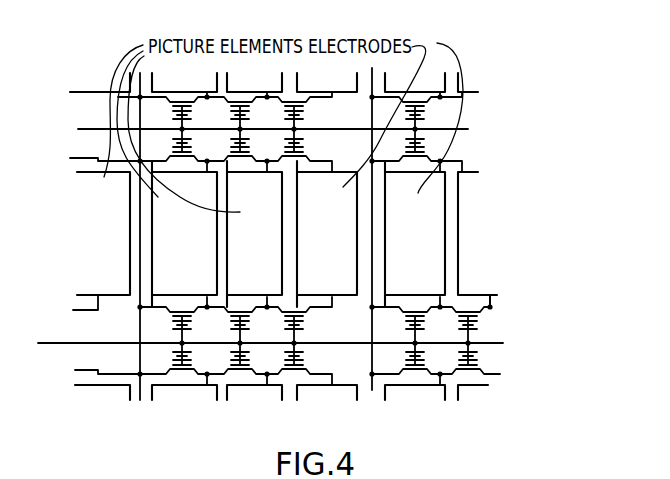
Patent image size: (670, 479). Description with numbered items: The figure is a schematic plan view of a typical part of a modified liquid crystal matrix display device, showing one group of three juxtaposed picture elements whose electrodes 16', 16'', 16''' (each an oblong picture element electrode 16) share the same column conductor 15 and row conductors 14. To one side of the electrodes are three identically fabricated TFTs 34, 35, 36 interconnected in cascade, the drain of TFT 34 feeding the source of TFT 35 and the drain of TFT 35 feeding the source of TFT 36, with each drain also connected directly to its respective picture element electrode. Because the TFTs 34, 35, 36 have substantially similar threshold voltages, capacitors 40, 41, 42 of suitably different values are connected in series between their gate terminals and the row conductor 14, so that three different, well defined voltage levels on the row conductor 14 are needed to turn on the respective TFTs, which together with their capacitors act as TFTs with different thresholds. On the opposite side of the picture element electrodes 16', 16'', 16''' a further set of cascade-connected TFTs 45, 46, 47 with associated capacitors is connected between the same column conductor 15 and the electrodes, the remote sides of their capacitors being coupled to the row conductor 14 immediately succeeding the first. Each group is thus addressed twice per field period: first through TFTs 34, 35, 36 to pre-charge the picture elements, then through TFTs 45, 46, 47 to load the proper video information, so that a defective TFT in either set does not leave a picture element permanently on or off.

The row conductor 14 is at (78, 130).
The column conductor 15 is at (138, 110).
The picture element electrode 16 is at (254, 234).
The picture element electrode 16' is at (184, 234).
The picture element electrode 16'' is at (254, 234).
The picture element electrode 16''' is at (327, 234).
The TFT 34 is at (178, 149).
The TFT 35 is at (237, 149).
The TFT 36 is at (303, 153).
The capacitor 40 is at (192, 114).
The capacitor 41 is at (250, 138).
The capacitor 42 is at (303, 135).
The TFT 45 is at (175, 328).
The TFT 46 is at (245, 325).
The TFT 47 is at (304, 326).